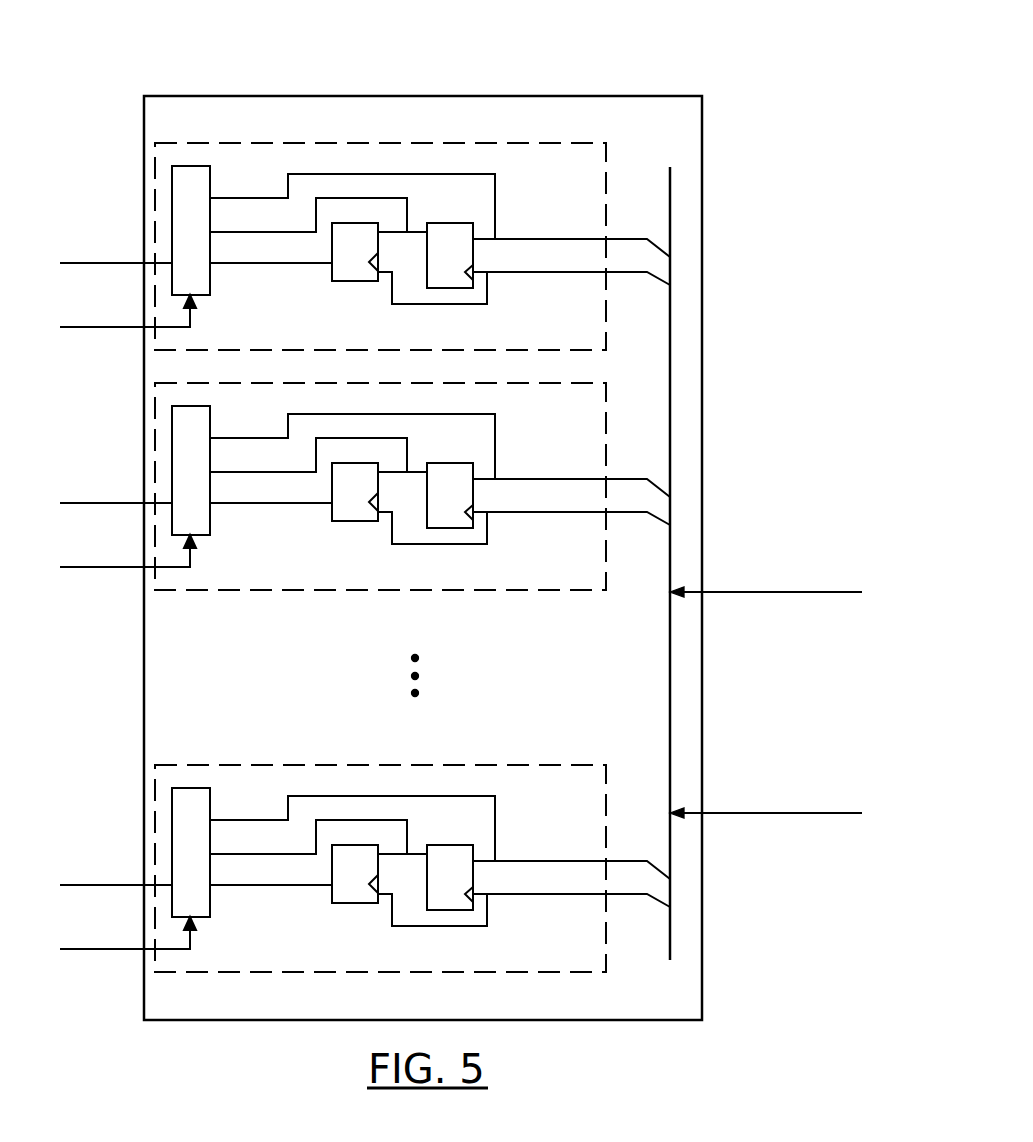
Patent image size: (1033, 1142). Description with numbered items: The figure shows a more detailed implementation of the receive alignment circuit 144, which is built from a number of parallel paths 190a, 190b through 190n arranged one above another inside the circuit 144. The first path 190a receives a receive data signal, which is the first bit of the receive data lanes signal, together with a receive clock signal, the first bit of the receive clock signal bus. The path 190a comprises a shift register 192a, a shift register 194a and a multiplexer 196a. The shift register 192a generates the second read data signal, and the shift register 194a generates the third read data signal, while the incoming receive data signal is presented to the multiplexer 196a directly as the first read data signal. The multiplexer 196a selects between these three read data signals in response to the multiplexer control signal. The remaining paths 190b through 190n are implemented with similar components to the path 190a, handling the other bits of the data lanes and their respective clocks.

The receive alignment circuit 144 is at (248, 37).
The path 190a is at (228, 143).
The path 190b is at (240, 589).
The path 190n is at (240, 970).
The shift register 192a is at (455, 223).
The shift register 194a is at (367, 282).
The multiplexer 196a is at (212, 283).